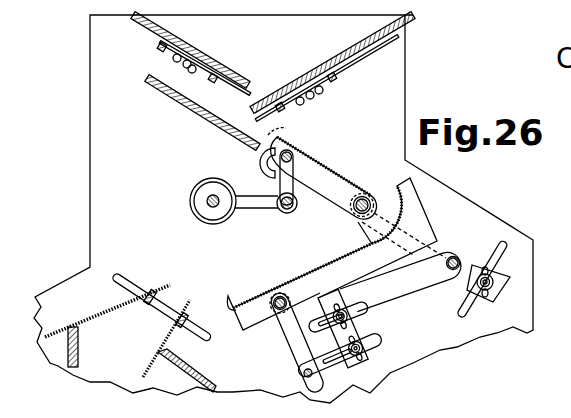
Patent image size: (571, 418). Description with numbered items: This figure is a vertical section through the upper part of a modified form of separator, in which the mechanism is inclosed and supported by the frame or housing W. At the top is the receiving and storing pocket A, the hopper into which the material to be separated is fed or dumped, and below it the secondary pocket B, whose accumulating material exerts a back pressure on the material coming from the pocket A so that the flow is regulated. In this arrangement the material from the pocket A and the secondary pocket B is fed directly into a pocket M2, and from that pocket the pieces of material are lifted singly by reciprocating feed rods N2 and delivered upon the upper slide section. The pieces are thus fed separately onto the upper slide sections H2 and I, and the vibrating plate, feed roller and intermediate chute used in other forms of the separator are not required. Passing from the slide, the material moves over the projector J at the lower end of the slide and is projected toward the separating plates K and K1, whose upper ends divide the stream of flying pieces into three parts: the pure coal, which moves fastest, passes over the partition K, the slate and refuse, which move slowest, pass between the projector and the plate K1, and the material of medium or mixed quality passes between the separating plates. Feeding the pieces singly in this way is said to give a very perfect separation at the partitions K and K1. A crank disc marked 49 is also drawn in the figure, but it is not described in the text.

The receiving and storing pocket A is at (273, 67).
The secondary pocket B is at (202, 113).
The frame W is at (283, 209).
The pocket M2 is at (267, 150).
The reciprocating feed rods N2 is at (265, 181).
The upper slide section H2 is at (354, 196).
The upper slide section I is at (371, 286).
The projector J is at (273, 306).
The separating plate K is at (107, 325).
The separating plate K1 is at (163, 332).
The crank disc 49 is at (221, 201).